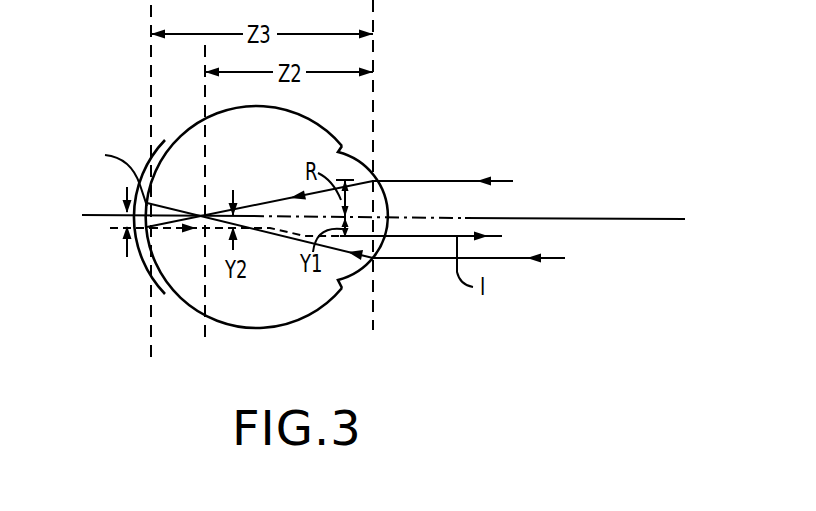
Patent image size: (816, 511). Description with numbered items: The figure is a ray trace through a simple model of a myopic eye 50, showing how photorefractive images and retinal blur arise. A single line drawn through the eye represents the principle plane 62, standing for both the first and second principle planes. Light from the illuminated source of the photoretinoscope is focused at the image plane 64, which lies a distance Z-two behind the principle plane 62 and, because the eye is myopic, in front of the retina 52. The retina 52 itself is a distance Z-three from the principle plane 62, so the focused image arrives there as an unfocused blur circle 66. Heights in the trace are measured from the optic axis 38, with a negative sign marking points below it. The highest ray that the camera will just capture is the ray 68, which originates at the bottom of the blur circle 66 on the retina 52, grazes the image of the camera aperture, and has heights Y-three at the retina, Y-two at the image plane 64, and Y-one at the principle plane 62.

The optic axis 38 is at (608, 221).
The eye 50 is at (320, 310).
The retina 52 is at (152, 188).
The principle plane 62 is at (373, 335).
The image plane 64 is at (204, 338).
The blur circle 66 is at (143, 219).
The ray 68 is at (164, 229).